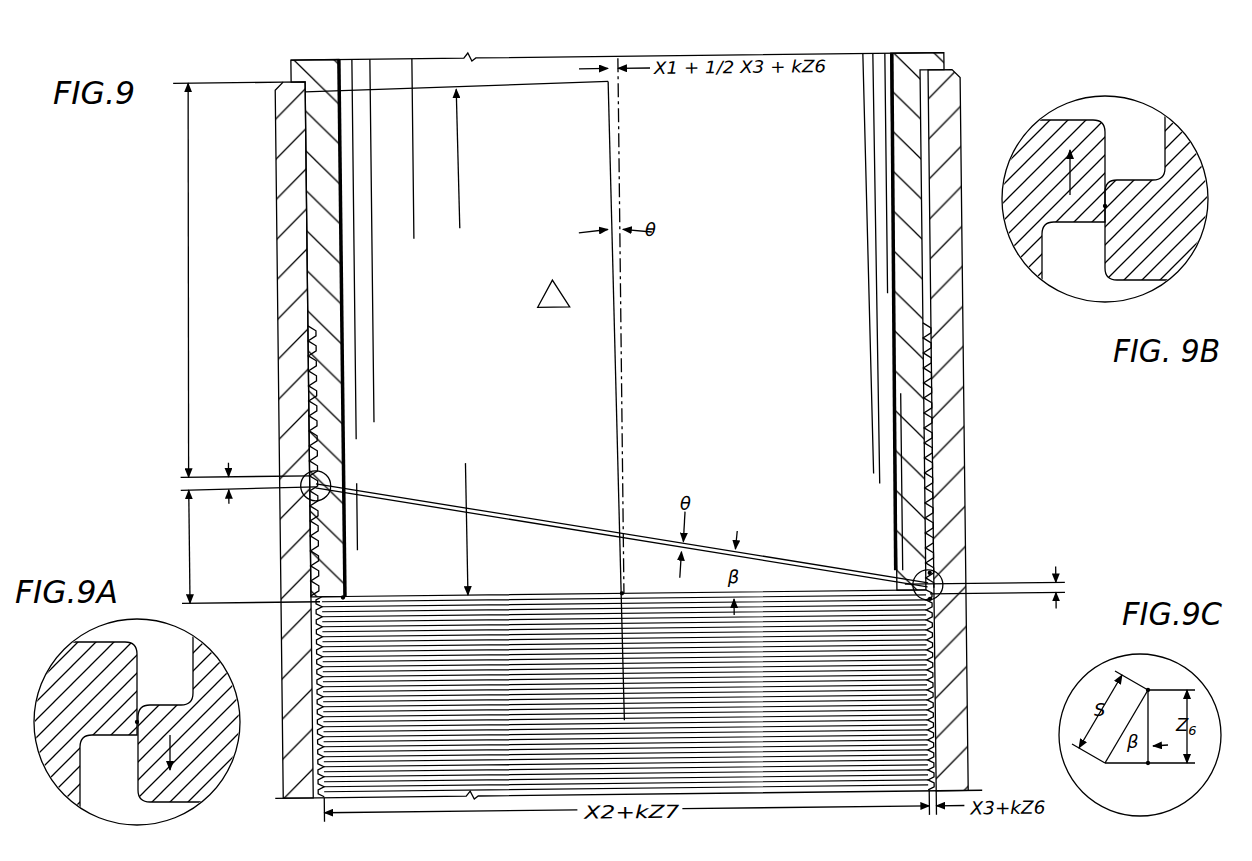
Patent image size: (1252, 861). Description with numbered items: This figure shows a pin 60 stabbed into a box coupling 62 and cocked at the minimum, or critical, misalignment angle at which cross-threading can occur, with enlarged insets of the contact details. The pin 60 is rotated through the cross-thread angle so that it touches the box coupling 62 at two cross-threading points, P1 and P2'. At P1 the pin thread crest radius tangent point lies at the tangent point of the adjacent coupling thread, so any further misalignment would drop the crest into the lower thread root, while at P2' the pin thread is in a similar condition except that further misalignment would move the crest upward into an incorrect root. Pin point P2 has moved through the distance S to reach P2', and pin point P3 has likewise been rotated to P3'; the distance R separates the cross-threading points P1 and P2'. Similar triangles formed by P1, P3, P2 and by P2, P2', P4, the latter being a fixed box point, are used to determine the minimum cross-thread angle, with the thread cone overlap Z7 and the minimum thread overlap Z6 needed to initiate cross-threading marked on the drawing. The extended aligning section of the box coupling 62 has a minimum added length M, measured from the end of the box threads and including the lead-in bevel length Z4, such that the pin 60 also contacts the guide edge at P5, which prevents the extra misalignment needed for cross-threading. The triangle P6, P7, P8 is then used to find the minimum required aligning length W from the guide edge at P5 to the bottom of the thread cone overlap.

In FIG. 9, the pin 60 is at (911, 107).
In FIG. 9, the box coupling 62 is at (950, 152).
In FIG. 9, the cross-threading point P1 is at (330, 482).
In FIG. 9A, the cross-threading point P1 is at (136, 726).
In FIG. 9, the pin point P2 is at (895, 612).
In FIG. 9C, the pin point P2 is at (1118, 742).
In FIG. 9, the rotated pin point P2' is at (973, 546).
In FIG. 9B, the rotated pin point P2' is at (1128, 214).
In FIG. 9C, the rotated pin point P2' is at (1156, 680).
In FIG. 9, the pin point P3 is at (251, 622).
In FIG. 9, the rotated pin point P3' is at (372, 576).
In FIG. 9, the fixed box point P4 is at (930, 612).
In FIG. 9C, the fixed box point P4 is at (1157, 778).
In FIG. 9, the contact point P5 is at (311, 93).
In FIG. 9, the point P6 is at (622, 597).
In FIG. 9, the point P7 is at (624, 86).
In FIG. 9, the point P8 is at (614, 88).
In FIG. 9, the minimum added length of box coupling extension M is at (241, 279).
In FIG. 9, the minimum required aligning length W is at (454, 342).
In FIG. 9, the distance R is at (621, 535).
In FIG. 9, the distance S is at (905, 582).
In FIG. 9, the lead-in bevel length Z4 is at (248, 499).
In FIG. 9, the minimum thread overlap Z6 is at (984, 576).
In FIG. 9, the thread cone overlap Z7 is at (186, 546).